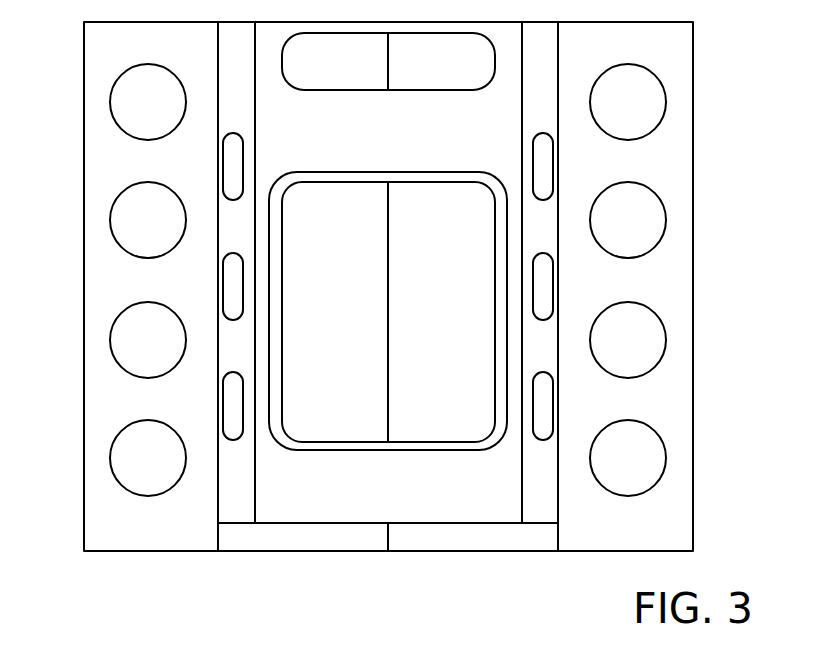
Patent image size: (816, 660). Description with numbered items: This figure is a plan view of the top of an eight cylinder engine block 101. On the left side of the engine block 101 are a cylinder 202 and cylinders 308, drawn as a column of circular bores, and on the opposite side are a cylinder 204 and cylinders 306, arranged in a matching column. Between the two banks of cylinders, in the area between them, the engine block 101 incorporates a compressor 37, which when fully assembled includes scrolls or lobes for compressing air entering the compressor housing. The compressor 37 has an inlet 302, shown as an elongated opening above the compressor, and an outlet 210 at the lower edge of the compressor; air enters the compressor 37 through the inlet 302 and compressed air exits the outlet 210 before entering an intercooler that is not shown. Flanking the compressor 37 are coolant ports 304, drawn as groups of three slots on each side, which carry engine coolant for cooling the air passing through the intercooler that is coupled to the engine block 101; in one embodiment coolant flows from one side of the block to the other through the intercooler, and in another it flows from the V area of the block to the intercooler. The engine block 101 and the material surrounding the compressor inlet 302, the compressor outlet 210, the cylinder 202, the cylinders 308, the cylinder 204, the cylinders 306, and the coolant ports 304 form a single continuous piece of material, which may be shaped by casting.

The engine block 101 is at (143, 551).
The compressor inlet 302 is at (348, 90).
The compressor outlet 210 is at (347, 450).
The compressor 37 is at (382, 321).
The cylinders 308 is at (110, 102).
The cylinders 306 is at (666, 102).
The cylinder 202 is at (116, 478).
The cylinder 204 is at (665, 452).
The coolant ports 304 is at (223, 165).